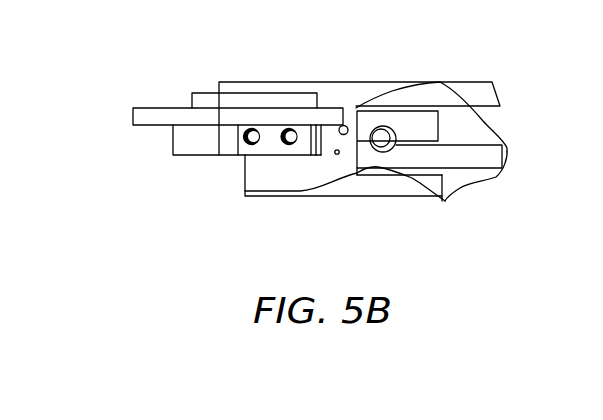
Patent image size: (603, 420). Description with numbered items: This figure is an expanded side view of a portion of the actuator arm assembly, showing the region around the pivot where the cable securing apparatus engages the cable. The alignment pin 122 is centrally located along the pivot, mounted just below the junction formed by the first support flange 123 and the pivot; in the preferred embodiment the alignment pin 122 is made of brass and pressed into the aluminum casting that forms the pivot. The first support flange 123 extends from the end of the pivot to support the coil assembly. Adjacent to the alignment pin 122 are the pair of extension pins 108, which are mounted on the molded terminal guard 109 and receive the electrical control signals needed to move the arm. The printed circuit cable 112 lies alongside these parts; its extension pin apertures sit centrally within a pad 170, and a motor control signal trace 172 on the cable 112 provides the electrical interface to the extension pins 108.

The extension pins 108 is at (248, 126).
The molded terminal guard 109 is at (263, 148).
The printed circuit cable 112 is at (473, 133).
The alignment pin 122 is at (344, 125).
The first support flange 123 is at (153, 108).
The pad 170 is at (338, 155).
The motor control signal trace 172 is at (311, 157).